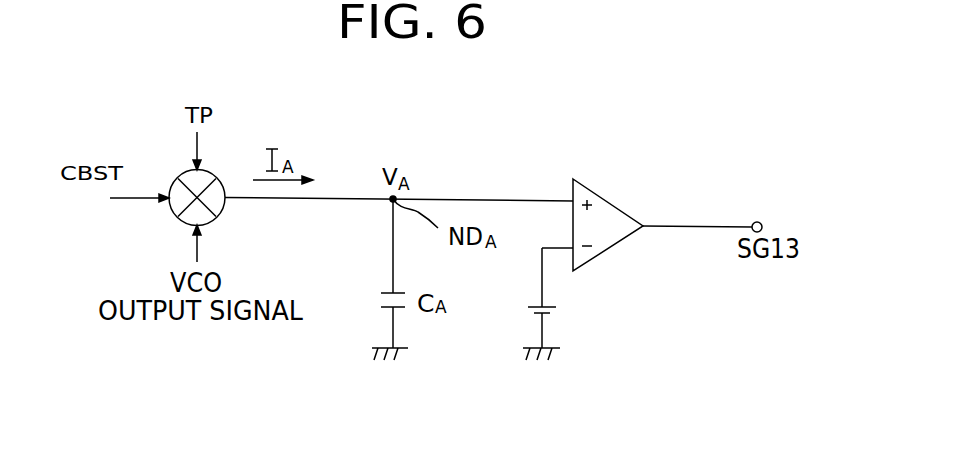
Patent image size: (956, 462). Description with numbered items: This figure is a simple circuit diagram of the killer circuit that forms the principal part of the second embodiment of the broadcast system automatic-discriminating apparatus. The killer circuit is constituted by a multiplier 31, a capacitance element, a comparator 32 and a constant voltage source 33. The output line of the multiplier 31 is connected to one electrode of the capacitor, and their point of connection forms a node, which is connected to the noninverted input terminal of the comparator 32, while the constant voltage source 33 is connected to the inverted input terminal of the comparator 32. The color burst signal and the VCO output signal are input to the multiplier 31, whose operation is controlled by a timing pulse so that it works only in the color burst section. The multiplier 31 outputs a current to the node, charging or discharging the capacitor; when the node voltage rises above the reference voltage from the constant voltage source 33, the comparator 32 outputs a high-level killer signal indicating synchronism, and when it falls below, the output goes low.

The multiplier 31 is at (177, 217).
The comparator 32 is at (618, 202).
The constant voltage source 33 is at (533, 311).